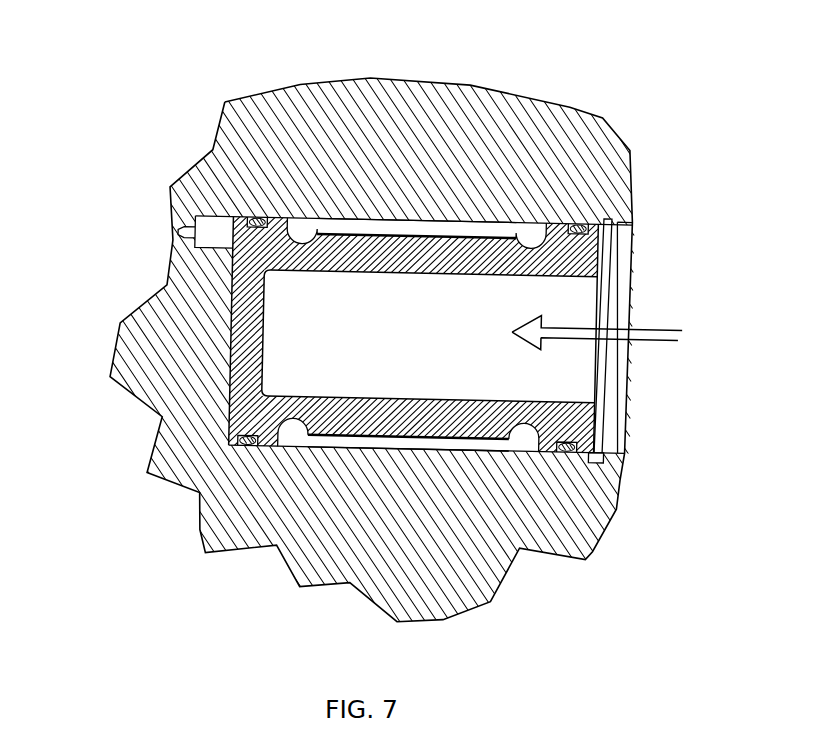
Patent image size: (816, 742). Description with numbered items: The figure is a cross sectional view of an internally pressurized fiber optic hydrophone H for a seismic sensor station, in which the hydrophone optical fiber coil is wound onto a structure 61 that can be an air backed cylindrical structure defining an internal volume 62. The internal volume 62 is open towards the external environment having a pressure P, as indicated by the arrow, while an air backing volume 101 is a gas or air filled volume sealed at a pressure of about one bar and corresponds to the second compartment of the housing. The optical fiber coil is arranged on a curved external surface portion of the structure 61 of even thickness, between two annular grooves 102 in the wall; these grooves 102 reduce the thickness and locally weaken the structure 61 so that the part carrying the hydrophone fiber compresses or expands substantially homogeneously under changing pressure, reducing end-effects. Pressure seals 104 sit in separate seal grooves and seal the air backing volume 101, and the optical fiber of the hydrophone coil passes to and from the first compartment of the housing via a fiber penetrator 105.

The structure 61 is at (456, 247).
The internal volume 62 is at (295, 381).
The air backing volume 101 is at (368, 229).
The annular grooves 102 is at (298, 235).
The pressure seals 104 is at (256, 216).
The fiber penetrator 105 is at (260, 235).
The hydrophone H is at (400, 233).
The pressure P is at (581, 333).